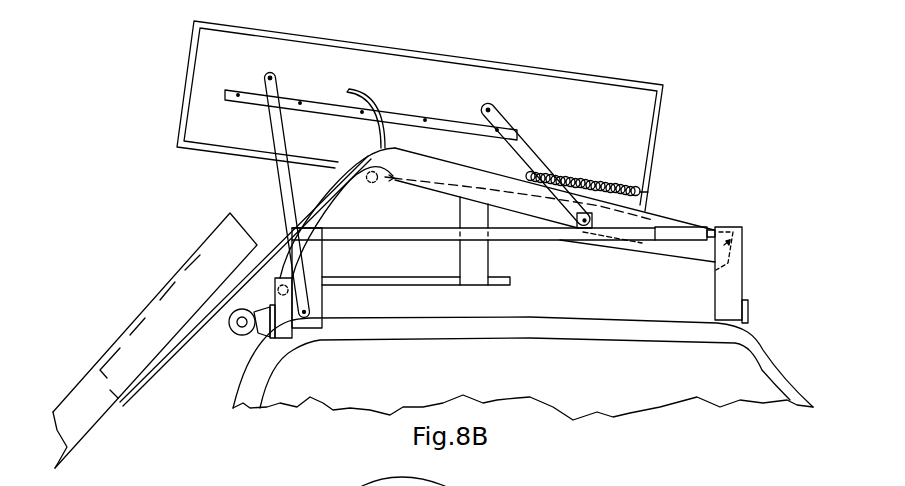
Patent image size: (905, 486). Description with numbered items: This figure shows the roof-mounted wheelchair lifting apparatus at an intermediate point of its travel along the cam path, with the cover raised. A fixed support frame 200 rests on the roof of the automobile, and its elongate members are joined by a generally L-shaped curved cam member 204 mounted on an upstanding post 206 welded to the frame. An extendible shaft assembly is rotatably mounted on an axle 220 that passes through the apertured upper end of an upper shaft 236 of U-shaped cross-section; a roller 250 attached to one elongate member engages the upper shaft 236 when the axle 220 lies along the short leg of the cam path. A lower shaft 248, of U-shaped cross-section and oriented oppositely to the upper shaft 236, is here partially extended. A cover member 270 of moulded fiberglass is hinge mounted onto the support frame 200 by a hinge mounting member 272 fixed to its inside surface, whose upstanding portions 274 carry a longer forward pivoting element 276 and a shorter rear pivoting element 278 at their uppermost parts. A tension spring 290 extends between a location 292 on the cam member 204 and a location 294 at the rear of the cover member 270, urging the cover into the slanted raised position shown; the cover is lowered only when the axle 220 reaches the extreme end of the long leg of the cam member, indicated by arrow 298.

The fixed support frame 200 is at (755, 305).
The cam member 204 is at (698, 252).
The upstanding post 206 is at (742, 271).
The axle 220 is at (370, 157).
The upper shaft 236 is at (282, 233).
The lower shaft 248 is at (178, 278).
The roller 250 is at (243, 335).
The cover member 270 is at (438, 53).
The hinge mounting member 272 is at (388, 110).
The upstanding portion 274 is at (265, 80).
The forward pivoting element 276 is at (277, 128).
The rear pivoting element 278 is at (532, 157).
The tension spring 290 is at (593, 177).
The spring attachment location on cam member 292 is at (522, 176).
The spring attachment location on cover member 294 is at (648, 192).
The arrow indicating extreme end of cam long leg 298 is at (738, 240).